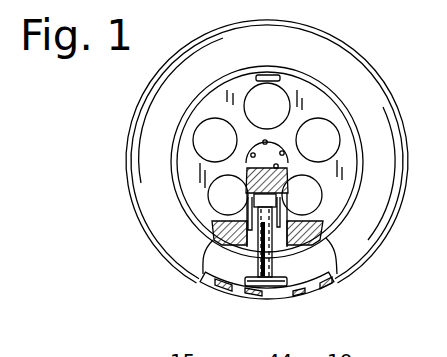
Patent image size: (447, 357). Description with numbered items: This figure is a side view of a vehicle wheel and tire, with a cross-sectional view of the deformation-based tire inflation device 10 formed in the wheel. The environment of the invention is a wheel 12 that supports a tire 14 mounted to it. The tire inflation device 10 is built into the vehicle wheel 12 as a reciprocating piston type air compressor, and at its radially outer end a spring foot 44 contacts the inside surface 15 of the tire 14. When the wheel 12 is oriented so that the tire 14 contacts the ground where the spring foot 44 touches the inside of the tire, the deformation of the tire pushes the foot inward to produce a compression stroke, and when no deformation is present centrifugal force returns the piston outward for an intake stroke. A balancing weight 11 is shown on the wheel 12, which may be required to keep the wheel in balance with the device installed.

The deformation-based tire inflation device 10 is at (281, 267).
The balancing weight 11 is at (273, 77).
The wheel 12 is at (320, 177).
The tire 14 is at (370, 75).
The inside surface of the tire 15 is at (230, 288).
The spring foot 44 is at (277, 292).